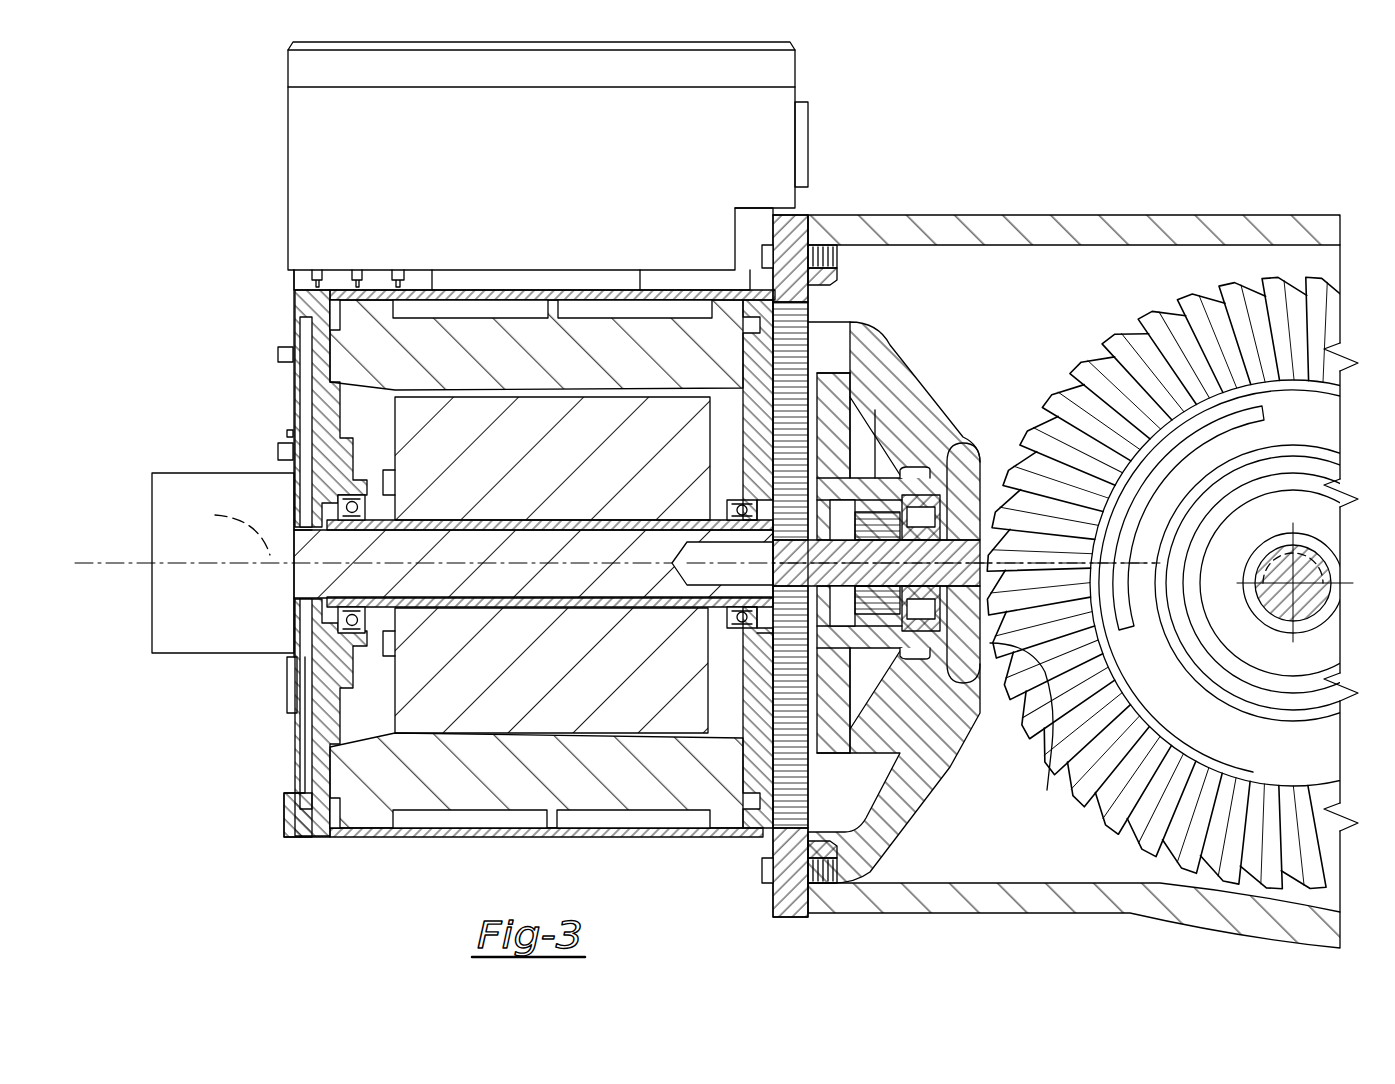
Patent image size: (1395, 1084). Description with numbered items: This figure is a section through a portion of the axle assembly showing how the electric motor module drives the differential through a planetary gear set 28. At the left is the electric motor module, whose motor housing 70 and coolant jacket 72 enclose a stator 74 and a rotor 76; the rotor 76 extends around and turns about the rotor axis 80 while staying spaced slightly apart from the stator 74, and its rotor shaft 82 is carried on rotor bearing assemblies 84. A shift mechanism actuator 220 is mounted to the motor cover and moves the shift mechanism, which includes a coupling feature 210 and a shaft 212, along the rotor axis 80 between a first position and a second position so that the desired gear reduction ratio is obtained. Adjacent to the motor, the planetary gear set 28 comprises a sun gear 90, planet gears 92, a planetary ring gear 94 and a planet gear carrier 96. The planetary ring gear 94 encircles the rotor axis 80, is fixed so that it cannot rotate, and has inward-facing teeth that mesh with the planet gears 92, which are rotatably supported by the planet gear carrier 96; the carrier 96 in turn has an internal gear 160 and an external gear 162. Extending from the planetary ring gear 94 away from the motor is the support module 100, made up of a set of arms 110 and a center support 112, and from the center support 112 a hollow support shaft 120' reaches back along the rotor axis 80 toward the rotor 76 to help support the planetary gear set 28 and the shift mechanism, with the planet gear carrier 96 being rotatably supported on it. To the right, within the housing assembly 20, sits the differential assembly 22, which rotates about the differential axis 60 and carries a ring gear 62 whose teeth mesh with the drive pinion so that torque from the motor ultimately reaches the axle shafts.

The housing assembly 20 is at (1252, 215).
The differential assembly 22 is at (1132, 325).
The planetary gear set 28 is at (868, 316).
The differential axis 60 is at (1235, 585).
The ring gear 62 is at (1152, 393).
The motor housing 70 is at (475, 840).
The coolant jacket 72 is at (630, 820).
The stator 74 is at (565, 360).
The rotor 76 is at (557, 470).
The rotor axis 80 is at (215, 515).
The rotor shaft 82 is at (456, 520).
The rotor bearing assemblies 84 is at (392, 496).
The sun gear 90 is at (780, 490).
The planet gears 92 is at (770, 396).
The planetary ring gear 94 is at (806, 800).
The planet gear carrier 96 is at (875, 410).
The support module 100 is at (990, 442).
The arms 110 is at (932, 393).
The center support 112 is at (1047, 792).
The support shaft 120' is at (879, 567).
The internal gear 160 is at (880, 615).
The external gear 162 is at (920, 632).
The coupling feature 210 is at (765, 652).
The shaft 212 is at (515, 577).
The shift mechanism actuator 220 is at (240, 605).